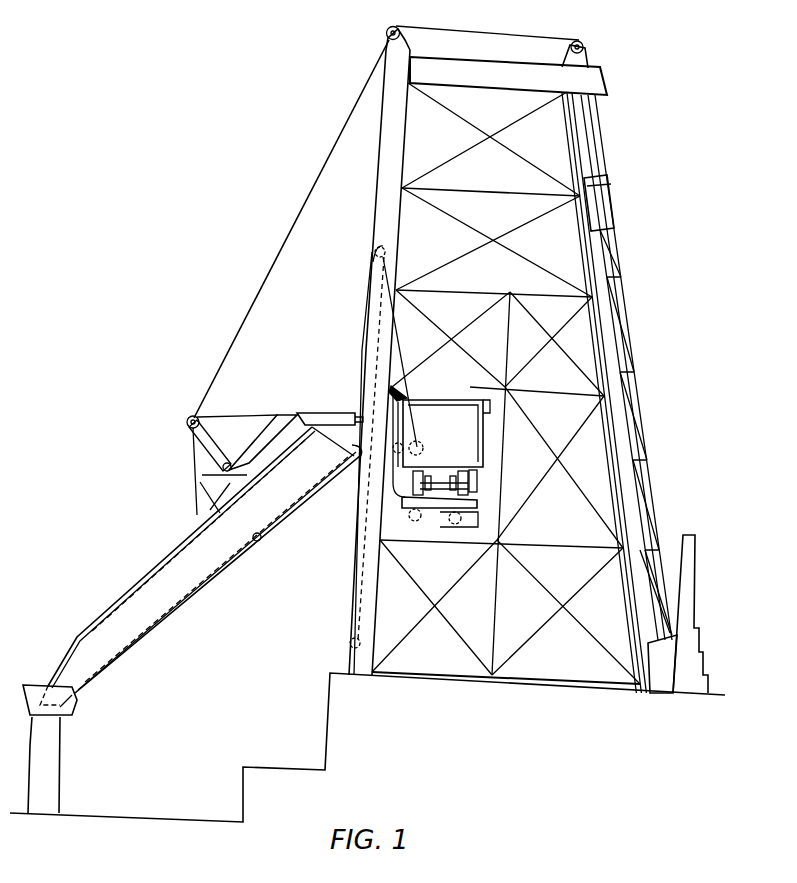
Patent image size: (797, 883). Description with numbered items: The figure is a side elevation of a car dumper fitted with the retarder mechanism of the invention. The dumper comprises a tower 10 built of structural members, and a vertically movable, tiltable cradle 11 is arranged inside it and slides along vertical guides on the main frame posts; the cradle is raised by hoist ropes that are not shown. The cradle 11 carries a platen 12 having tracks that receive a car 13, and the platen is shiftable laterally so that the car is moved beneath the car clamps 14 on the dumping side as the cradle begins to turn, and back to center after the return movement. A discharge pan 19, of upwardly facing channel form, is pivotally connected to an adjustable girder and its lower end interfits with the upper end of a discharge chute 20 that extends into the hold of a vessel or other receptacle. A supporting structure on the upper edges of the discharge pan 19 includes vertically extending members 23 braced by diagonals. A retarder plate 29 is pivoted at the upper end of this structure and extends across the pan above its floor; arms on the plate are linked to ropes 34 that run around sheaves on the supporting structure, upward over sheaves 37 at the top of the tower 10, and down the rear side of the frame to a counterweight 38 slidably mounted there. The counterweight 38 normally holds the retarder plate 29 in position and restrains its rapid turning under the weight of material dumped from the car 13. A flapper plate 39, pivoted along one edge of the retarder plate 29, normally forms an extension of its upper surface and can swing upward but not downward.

The tower 10 is at (383, 175).
The cradle 11 is at (478, 517).
The platen 12 is at (432, 520).
The car 13 is at (457, 442).
The car clamps 14 is at (417, 400).
The discharge pan 19 is at (204, 584).
The discharge chute 20 is at (57, 765).
The vertically extending members 23 is at (218, 428).
The retarder plate 29 is at (303, 403).
The ropes 34 is at (275, 270).
The sheaves 37 is at (399, 28).
The counterweight 38 is at (620, 222).
The flapper plate 39 is at (353, 415).